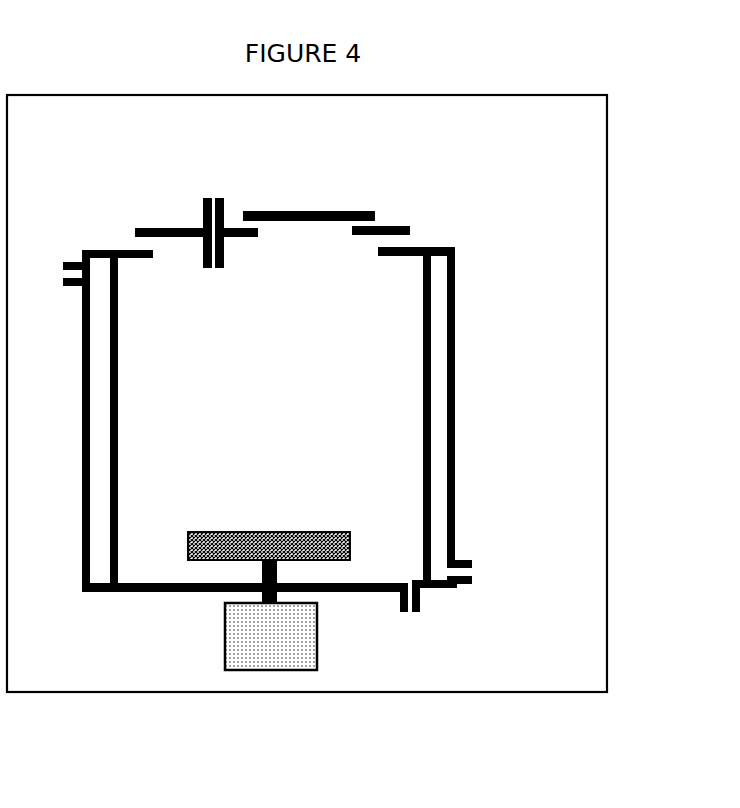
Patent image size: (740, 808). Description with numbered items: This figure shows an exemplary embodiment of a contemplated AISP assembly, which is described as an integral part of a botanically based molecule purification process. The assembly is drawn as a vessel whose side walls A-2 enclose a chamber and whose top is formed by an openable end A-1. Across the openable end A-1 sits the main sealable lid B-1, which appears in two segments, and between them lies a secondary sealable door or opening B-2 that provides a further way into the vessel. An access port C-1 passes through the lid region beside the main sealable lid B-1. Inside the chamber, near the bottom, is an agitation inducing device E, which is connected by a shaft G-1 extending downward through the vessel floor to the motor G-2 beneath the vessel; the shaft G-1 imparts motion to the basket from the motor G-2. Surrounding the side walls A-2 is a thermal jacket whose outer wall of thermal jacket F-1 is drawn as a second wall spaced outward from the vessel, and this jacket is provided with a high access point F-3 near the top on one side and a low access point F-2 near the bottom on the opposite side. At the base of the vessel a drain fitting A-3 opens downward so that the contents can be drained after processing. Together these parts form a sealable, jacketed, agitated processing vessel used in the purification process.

The openable end A-1 is at (121, 249).
The side walls A-2 is at (121, 362).
The drain fitting A-3 is at (422, 600).
The main sealable lid B-1 is at (167, 225).
The secondary sealable door or opening B-2 is at (270, 209).
The access port C-1 is at (226, 250).
The agitation inducing device E is at (228, 544).
The outer wall of thermal jacket F-1 is at (456, 309).
The low access point F-2 is at (473, 562).
The high access point F-3 is at (70, 261).
The shaft G-1 is at (258, 575).
The motor G-2 is at (293, 643).